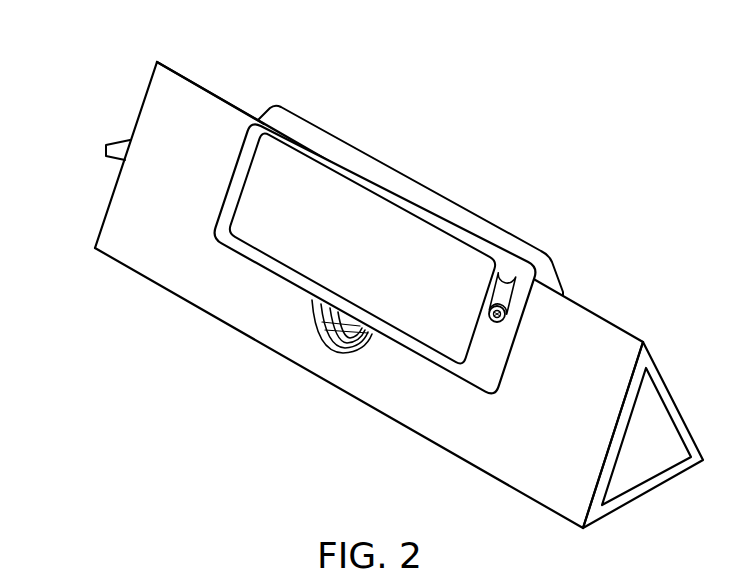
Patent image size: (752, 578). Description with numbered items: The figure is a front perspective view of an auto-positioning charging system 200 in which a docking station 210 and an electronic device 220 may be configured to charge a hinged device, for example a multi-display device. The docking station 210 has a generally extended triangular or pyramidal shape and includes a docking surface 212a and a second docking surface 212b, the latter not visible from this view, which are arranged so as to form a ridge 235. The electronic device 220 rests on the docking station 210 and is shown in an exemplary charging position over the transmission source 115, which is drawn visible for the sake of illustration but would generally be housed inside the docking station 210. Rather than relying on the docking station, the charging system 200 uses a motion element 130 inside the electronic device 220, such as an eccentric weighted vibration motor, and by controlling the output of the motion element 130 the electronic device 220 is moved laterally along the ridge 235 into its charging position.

The charging system 200 is at (368, 271).
The docking station 210 is at (368, 276).
The docking surface 212a is at (122, 208).
The docking surface 212b is at (218, 98).
The ridge 235 is at (187, 78).
The electronic device 220 is at (440, 195).
The transmission source 115 is at (317, 327).
The motion element 130 is at (505, 312).